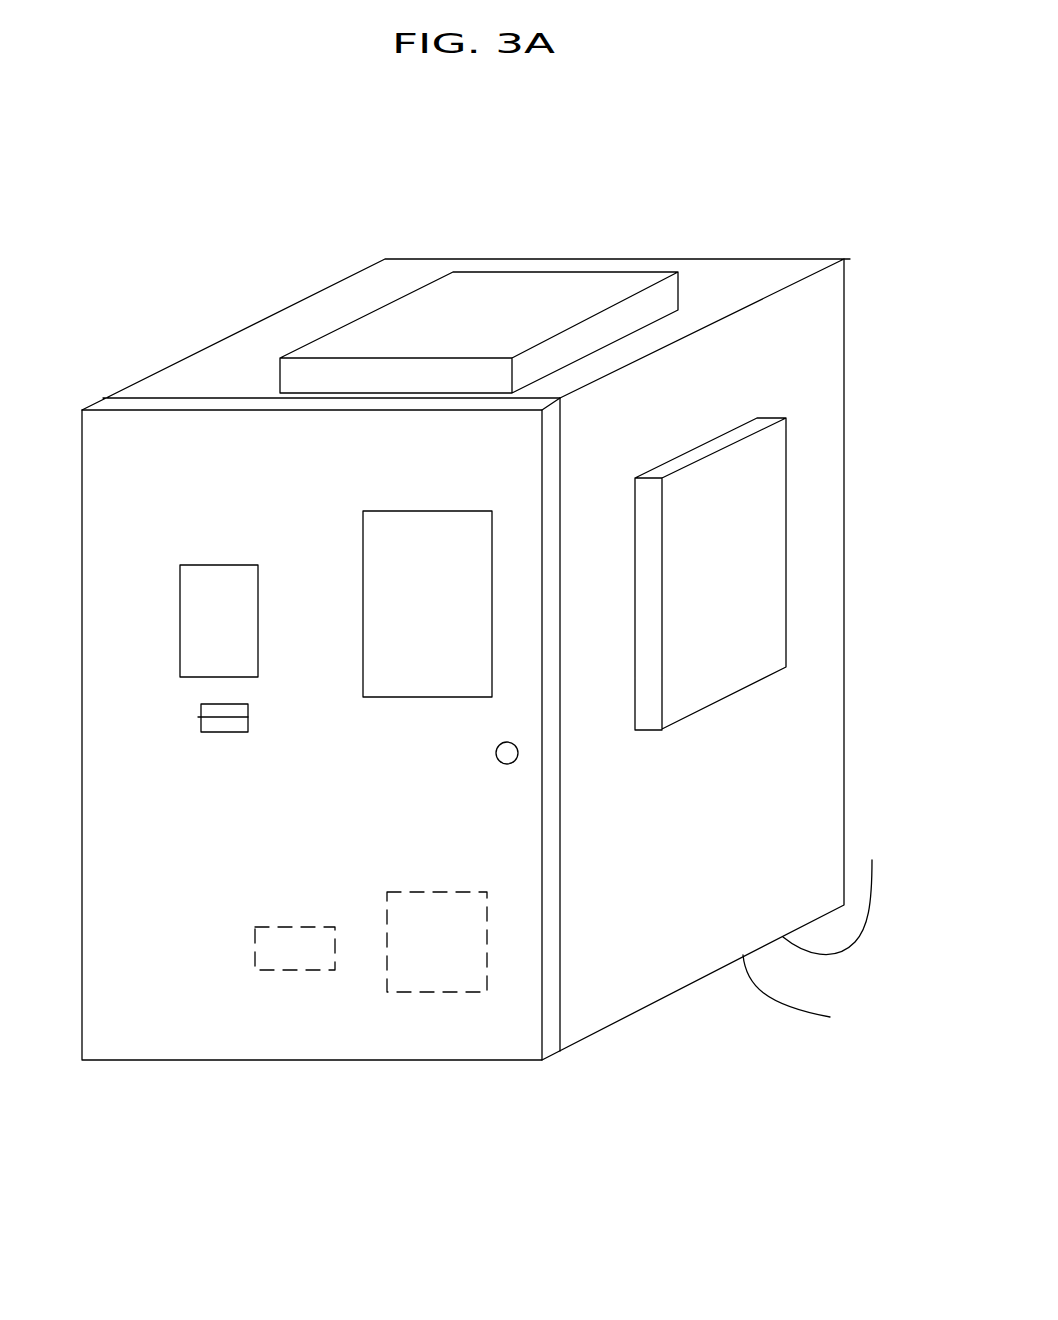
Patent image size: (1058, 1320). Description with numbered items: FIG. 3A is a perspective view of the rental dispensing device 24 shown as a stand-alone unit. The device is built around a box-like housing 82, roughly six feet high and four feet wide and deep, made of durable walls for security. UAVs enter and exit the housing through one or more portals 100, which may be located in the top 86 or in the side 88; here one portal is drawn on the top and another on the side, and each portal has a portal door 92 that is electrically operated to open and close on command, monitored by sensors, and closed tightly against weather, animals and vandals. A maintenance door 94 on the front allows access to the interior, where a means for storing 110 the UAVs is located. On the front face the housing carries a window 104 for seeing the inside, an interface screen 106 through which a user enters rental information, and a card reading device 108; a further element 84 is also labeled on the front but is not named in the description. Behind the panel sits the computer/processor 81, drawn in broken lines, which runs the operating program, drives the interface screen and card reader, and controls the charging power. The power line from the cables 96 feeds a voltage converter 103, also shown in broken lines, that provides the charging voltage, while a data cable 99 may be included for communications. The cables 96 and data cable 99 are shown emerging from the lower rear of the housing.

The rental dispensing device 24 is at (587, 193).
The means for storing the UAVs 110 is at (694, 222).
The housing 82 is at (333, 805).
The door 84 is at (142, 980).
The top 86 is at (213, 380).
The side 88 is at (610, 963).
The portal door 92 is at (367, 328).
The maintenance door 94 is at (548, 930).
The cables 96 is at (840, 955).
The data cable 99 is at (772, 1007).
The portal 100 is at (470, 305).
The voltage converter 103 is at (292, 947).
The window 104 is at (440, 577).
The interface screen 106 is at (200, 605).
The card reading device 108 is at (240, 723).
The computer/processor 81 is at (430, 932).